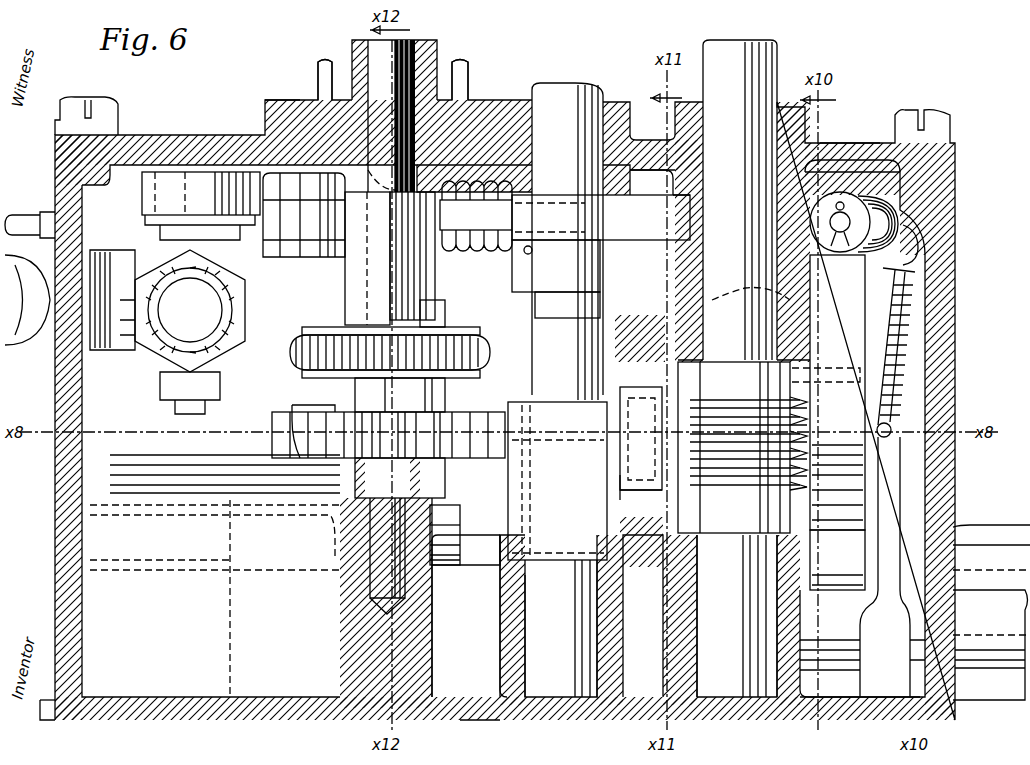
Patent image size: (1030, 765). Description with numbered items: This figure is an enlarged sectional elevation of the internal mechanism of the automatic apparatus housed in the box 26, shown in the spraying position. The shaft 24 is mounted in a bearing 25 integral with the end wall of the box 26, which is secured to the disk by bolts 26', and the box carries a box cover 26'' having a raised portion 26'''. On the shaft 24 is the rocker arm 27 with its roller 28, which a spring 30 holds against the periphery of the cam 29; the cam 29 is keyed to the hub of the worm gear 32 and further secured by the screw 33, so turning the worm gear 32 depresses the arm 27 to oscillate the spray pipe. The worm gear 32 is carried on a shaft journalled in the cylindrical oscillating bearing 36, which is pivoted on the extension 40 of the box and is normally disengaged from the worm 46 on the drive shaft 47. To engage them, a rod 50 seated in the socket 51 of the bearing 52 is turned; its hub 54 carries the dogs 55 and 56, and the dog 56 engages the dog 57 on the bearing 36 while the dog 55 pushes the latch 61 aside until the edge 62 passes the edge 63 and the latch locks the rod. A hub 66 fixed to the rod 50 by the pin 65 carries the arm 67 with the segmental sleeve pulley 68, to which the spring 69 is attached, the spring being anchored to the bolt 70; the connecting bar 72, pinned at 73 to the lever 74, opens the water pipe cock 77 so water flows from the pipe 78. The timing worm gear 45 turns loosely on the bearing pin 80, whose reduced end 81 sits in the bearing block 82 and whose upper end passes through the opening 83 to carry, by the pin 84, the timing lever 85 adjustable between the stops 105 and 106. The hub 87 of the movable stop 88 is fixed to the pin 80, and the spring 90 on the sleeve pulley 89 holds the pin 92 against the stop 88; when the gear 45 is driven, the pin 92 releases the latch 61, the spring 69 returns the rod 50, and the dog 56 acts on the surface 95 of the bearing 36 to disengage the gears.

The shaft 24 is at (1025, 590).
The bearing 25 is at (985, 535).
The box 26 is at (509, 390).
The bolts 26' is at (475, 736).
The box cover 26'' is at (850, 130).
The raised portion 26''' is at (257, 105).
The rocker arm 27 is at (885, 478).
The roller 28 is at (837, 560).
The cam 29 is at (837, 392).
The spring 30 is at (905, 330).
The worm gear 32 is at (751, 289).
The screw 33 is at (840, 366).
The cylindrical oscillating bearing 36 is at (215, 483).
The extension 40 is at (225, 630).
The timing worm gear 45 is at (286, 415).
The worm 46 is at (733, 485).
The drive shaft 47 is at (740, 200).
The rod 50 is at (564, 390).
The socket 51 is at (525, 650).
The bearing 52 is at (500, 648).
The hub 54 is at (557, 481).
The dog 55 is at (458, 535).
The dog 56 is at (641, 429).
The dog 57 is at (641, 493).
The latch 61 is at (458, 545).
The edge 62 is at (436, 565).
The edge 63 is at (460, 556).
The pin 65 is at (556, 279).
The hub 66 is at (522, 262).
The arm 67 is at (601, 205).
The segmental sleeve pulley 68 is at (840, 213).
The spring 69 is at (495, 223).
The bolt 70 is at (35, 215).
The connecting bar 72 is at (476, 216).
The pin 73 is at (298, 258).
The lever 74 is at (201, 206).
The water pipe cock 77 is at (240, 282).
The pipe 78 is at (235, 312).
The bearing pin 80 is at (372, 42).
The reduced end 81 is at (372, 585).
The bearing block 82 is at (372, 625).
The opening 83 is at (425, 130).
The pin 84 is at (410, 42).
The timing lever 85 is at (437, 44).
The hub 87 is at (435, 268).
The movable stop 88 is at (360, 296).
The sleeve pulley 89 is at (470, 328).
The spring 90 is at (485, 352).
The pin 92 is at (440, 308).
The surface 95 is at (480, 405).
The stop 105 is at (470, 72).
The stop 106 is at (318, 70).